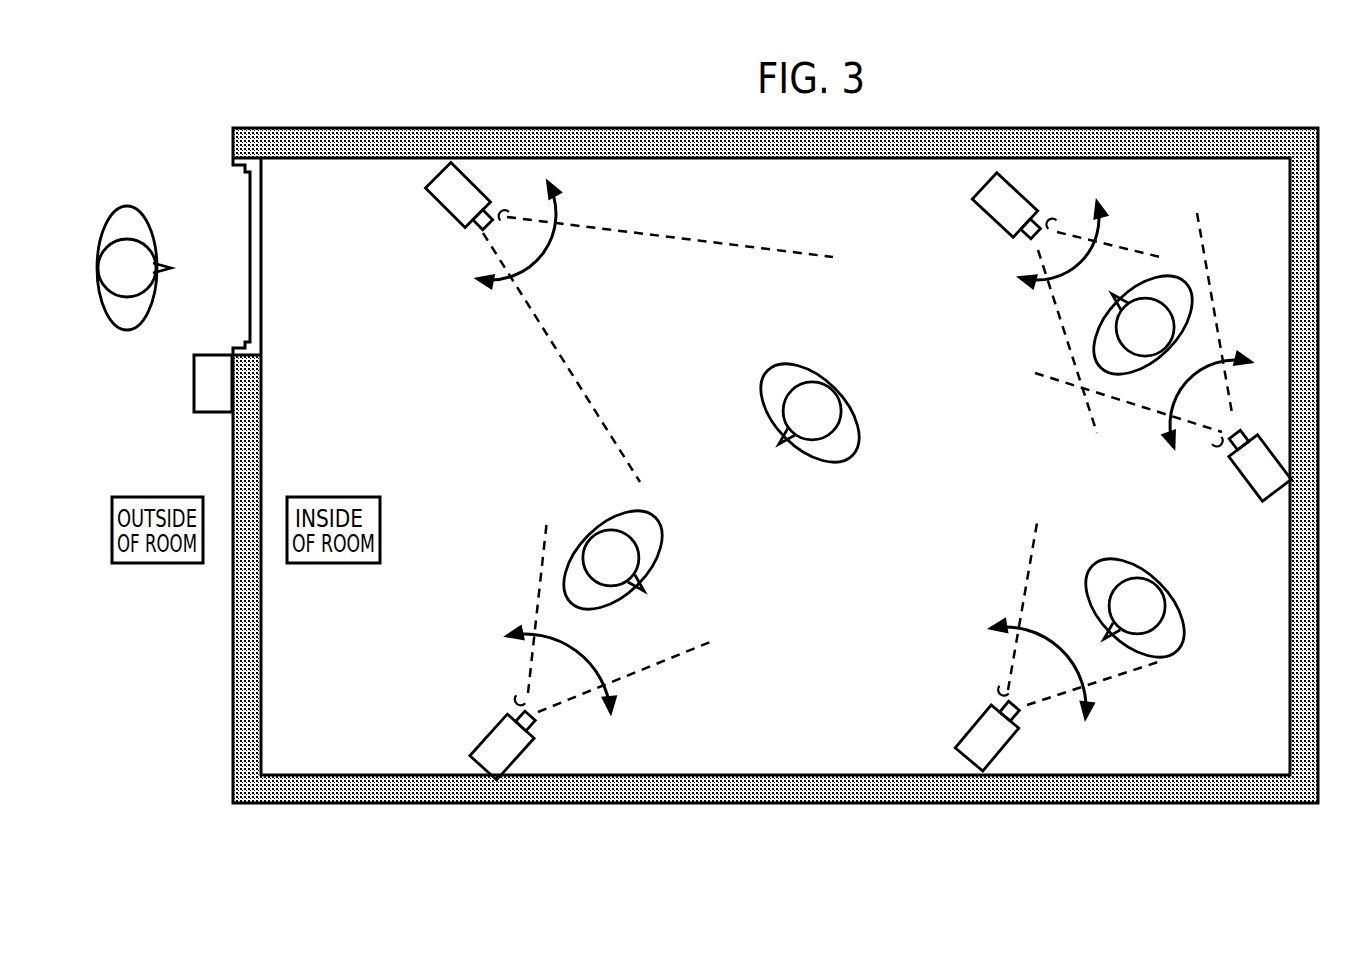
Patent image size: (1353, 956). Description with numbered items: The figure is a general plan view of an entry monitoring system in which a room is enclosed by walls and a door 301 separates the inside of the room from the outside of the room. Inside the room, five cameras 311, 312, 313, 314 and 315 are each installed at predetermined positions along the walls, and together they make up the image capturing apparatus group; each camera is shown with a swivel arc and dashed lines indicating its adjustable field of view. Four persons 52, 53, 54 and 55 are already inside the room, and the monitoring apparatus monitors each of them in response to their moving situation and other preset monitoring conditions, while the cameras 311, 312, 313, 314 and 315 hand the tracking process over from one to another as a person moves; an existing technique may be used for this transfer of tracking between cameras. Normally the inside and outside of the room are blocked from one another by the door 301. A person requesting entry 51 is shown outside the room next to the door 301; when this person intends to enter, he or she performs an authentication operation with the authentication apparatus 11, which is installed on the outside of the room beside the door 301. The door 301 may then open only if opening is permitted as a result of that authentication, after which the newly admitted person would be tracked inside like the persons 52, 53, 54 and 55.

The authentication apparatus 11 is at (193, 386).
The person requesting entry 51 is at (127, 207).
The person 52 is at (662, 522).
The person 53 is at (860, 444).
The person 54 is at (1100, 340).
The person 55 is at (1183, 622).
The door 301 is at (262, 256).
The camera 311 is at (437, 222).
The camera 312 is at (486, 732).
The camera 313 is at (992, 219).
The camera 314 is at (972, 722).
The camera 315 is at (1242, 486).